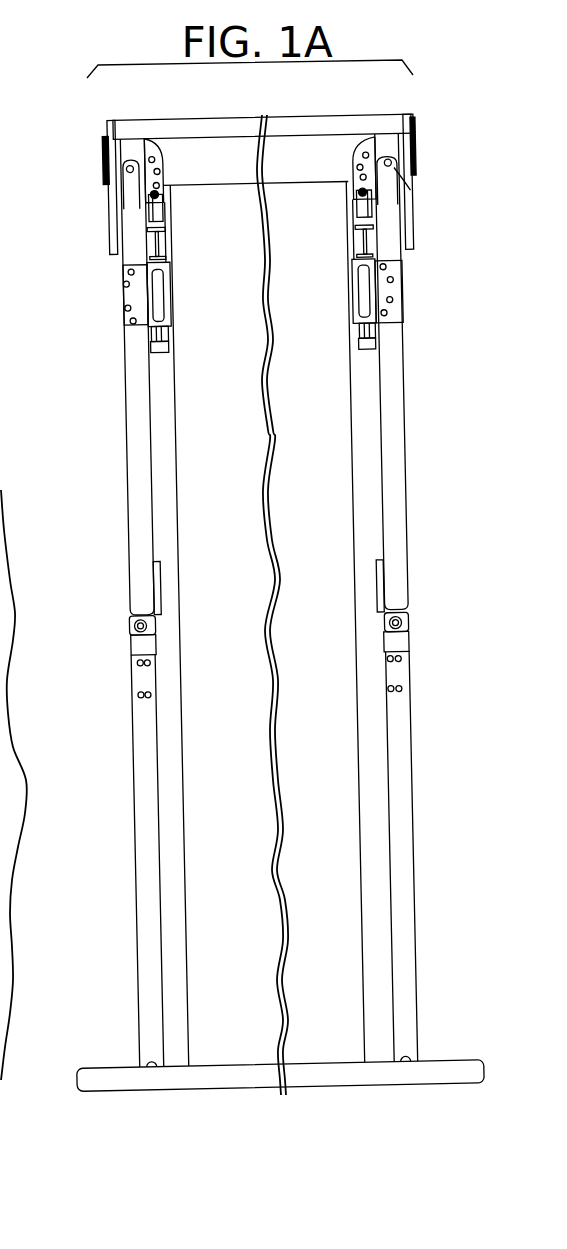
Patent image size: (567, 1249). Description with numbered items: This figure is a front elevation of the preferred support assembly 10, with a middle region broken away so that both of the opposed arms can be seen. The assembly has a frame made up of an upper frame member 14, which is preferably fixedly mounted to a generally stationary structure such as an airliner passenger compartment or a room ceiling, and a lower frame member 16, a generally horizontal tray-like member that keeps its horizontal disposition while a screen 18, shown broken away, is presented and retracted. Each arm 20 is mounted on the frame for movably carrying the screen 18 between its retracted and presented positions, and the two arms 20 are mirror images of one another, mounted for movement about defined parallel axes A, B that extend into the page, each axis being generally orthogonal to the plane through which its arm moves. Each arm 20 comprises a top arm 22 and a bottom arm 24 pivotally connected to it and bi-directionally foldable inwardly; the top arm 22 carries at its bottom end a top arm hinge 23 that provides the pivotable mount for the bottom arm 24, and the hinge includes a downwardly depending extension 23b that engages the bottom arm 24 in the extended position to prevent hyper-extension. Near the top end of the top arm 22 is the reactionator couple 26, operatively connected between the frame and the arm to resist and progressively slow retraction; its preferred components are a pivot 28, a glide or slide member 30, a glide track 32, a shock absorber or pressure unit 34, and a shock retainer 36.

The support assembly 10 is at (81, 159).
The upper frame member 14 is at (138, 116).
The lower frame member 16 is at (91, 1064).
The screen 18 is at (215, 140).
The arm 20 is at (116, 559).
The top arm 22 is at (138, 460).
The top arm hinge 23 is at (160, 588).
The extension 23b is at (154, 620).
The bottom arm 24 is at (129, 797).
The reactionator couple 26 is at (201, 288).
The pivot 28 is at (174, 156).
The glide or slide member 30 is at (178, 206).
The glide track 32 is at (173, 226).
The shock absorber or pressure unit 34 is at (179, 335).
The shock retainer 36 is at (182, 304).
The pivot axis A is at (136, 172).
The pivot axis B is at (419, 193).